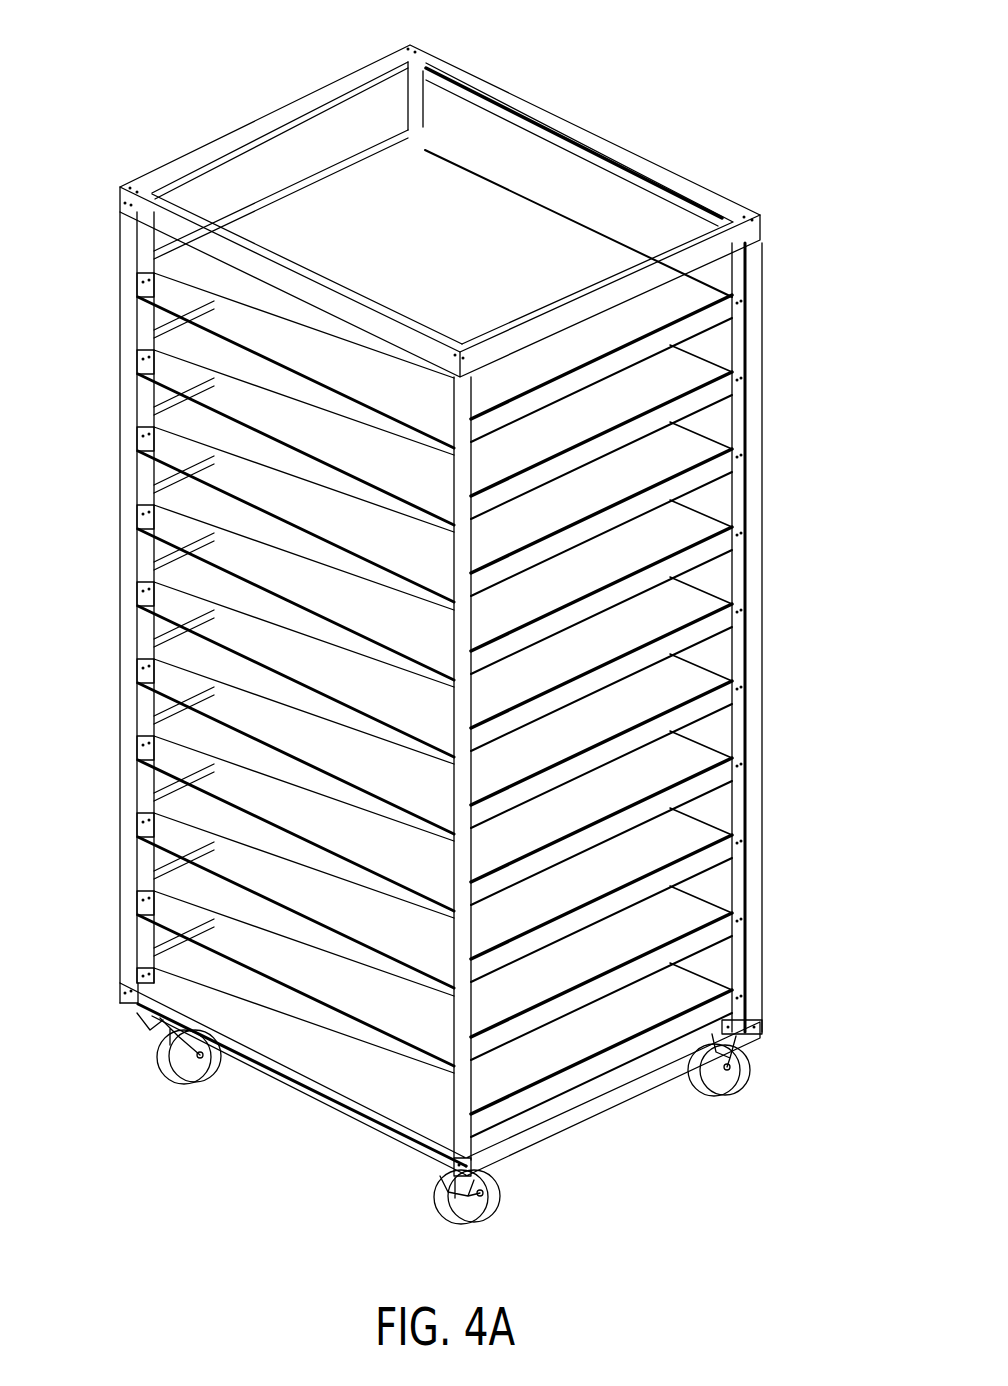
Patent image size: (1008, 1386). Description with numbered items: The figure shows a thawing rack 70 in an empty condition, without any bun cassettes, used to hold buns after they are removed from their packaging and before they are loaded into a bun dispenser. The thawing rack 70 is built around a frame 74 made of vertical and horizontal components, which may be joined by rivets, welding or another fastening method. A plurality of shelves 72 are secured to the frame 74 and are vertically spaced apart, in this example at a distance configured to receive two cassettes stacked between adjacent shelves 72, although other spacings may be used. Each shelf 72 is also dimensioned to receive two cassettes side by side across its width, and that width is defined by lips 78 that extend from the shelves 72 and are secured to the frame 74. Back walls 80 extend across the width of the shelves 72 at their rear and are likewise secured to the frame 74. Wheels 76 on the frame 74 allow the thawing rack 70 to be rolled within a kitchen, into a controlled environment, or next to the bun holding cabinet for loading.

The thawing rack 70 is at (663, 58).
The shelves 72 is at (192, 983).
The frame 74 is at (752, 661).
The wheels 76 is at (198, 1070).
The lips 78 is at (120, 998).
The back walls 80 is at (663, 225).